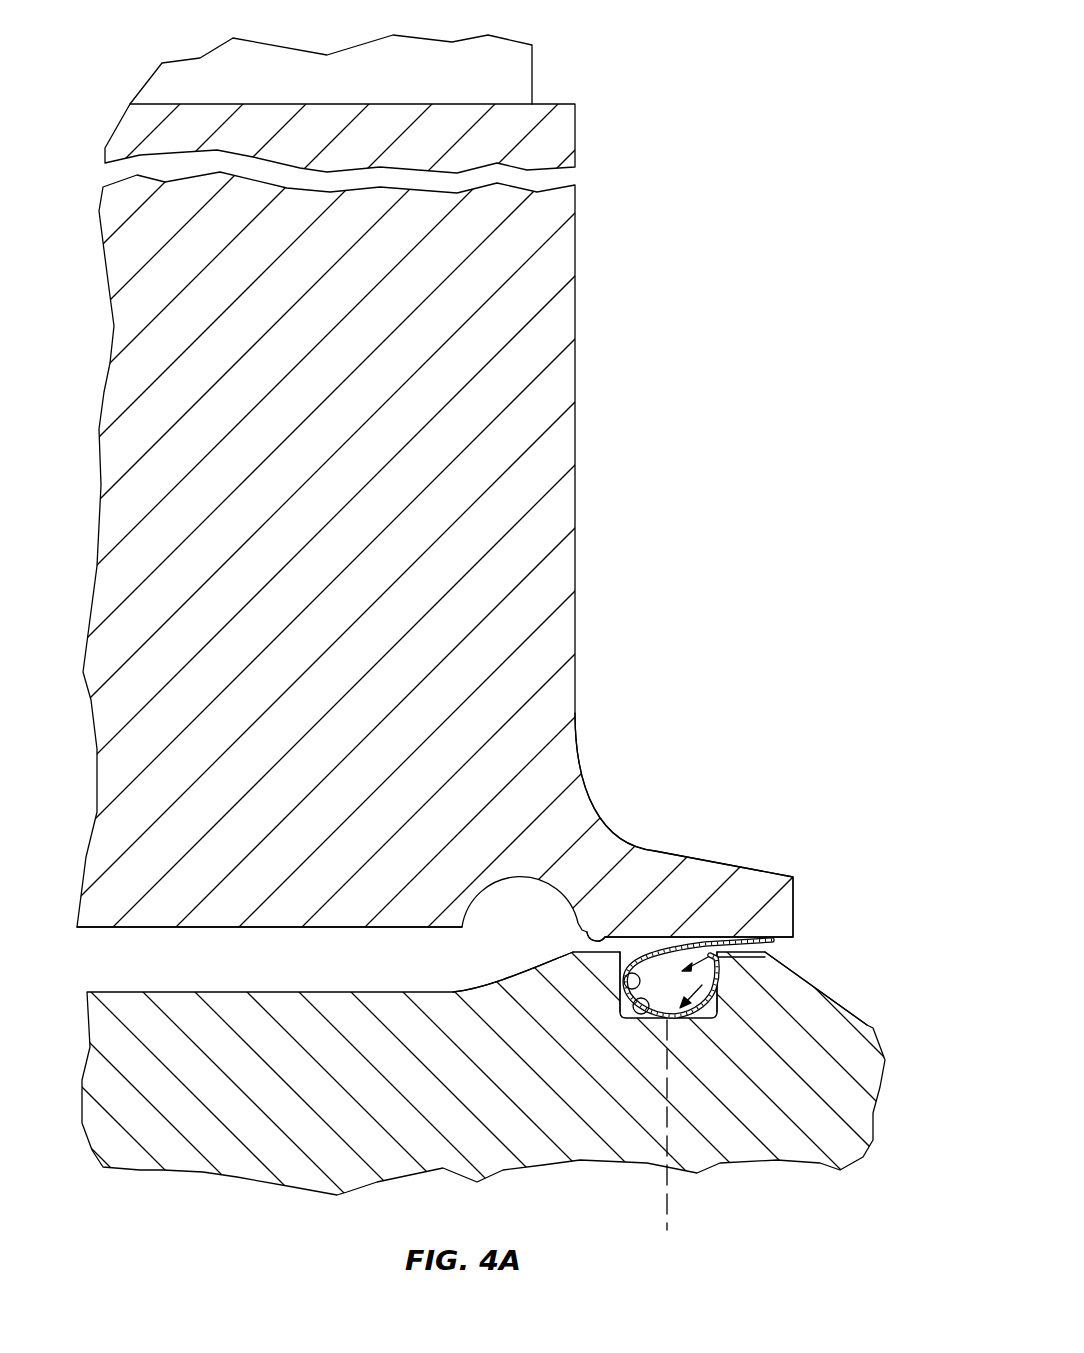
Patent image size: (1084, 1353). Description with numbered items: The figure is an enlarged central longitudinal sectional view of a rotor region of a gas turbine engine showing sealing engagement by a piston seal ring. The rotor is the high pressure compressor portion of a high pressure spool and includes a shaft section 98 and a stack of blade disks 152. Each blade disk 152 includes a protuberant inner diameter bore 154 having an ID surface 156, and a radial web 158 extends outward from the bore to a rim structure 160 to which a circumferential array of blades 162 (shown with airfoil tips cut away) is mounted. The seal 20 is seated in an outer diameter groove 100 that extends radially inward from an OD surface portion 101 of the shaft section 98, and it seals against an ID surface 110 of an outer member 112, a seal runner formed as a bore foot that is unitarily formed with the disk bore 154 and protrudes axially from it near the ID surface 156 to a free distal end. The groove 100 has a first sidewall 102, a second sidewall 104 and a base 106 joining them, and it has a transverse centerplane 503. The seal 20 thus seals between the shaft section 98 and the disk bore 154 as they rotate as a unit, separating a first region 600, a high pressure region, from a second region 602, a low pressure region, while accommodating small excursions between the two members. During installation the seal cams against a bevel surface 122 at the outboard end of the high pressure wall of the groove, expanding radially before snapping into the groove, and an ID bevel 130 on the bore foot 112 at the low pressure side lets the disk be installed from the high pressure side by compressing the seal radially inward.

The seal 20 is at (742, 947).
The shaft section 98 is at (413, 1093).
The outer diameter groove 100 is at (790, 982).
The outer diameter surface portion 101 is at (575, 947).
The first sidewall 102 is at (712, 1018).
The second sidewall 104 is at (625, 1005).
The base 106 is at (647, 1020).
The ID surface 110 is at (617, 957).
The outer member 112 is at (697, 887).
The bevel surface 122 is at (780, 977).
The ID bevel 130 is at (605, 930).
The blade disk 152 is at (620, 252).
The inner diameter bore 154 is at (350, 827).
The ID surface 156 is at (290, 927).
The radial web 158 is at (527, 312).
The rim structure 160 is at (553, 137).
The blades 162 is at (493, 73).
The transverse centerplane 503 is at (668, 1227).
The first region 600 is at (922, 1003).
The second region 602 is at (402, 975).